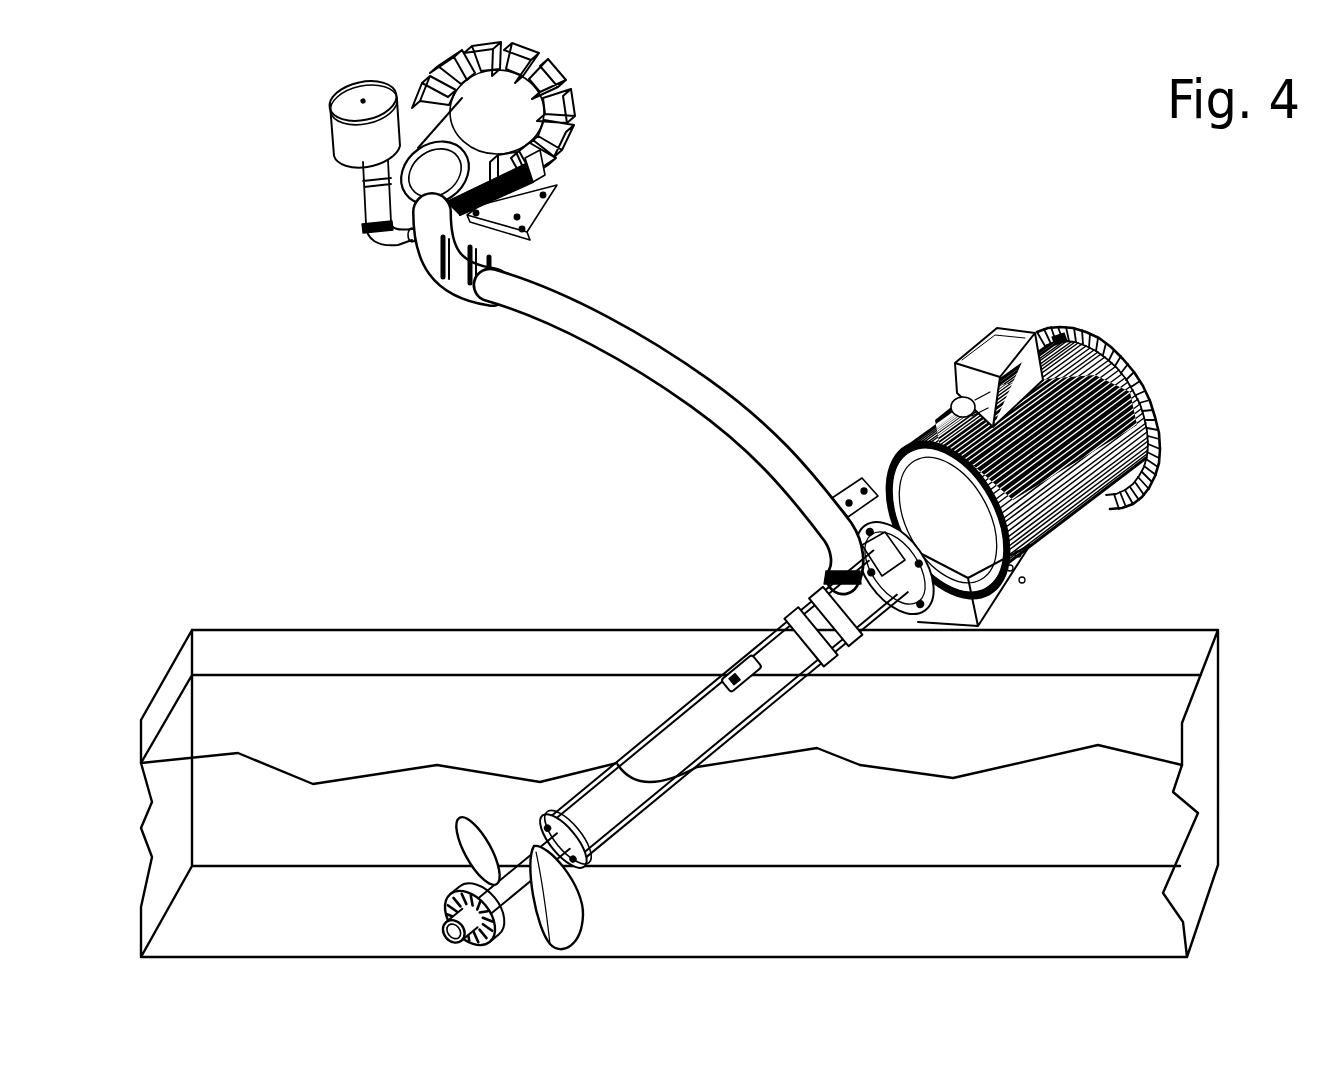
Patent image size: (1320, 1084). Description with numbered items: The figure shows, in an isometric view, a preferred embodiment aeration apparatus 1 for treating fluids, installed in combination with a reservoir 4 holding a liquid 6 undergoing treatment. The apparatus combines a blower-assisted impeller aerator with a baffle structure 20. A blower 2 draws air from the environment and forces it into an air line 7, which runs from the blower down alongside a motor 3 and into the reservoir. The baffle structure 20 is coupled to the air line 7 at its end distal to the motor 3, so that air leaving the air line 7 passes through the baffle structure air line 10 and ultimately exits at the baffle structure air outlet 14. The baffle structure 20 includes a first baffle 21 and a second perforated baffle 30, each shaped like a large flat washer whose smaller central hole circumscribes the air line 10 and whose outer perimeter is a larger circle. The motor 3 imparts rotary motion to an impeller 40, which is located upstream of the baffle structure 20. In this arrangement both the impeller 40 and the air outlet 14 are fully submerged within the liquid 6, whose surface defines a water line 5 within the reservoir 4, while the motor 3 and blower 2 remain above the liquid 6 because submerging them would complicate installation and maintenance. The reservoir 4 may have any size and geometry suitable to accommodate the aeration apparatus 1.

The aeration apparatus 1 is at (481, 313).
The blower 2 is at (345, 130).
The motor 3 is at (1158, 430).
The reservoir 4 is at (1223, 650).
The water line 5 is at (1123, 750).
The liquid 6 is at (1137, 822).
The air line 7 is at (808, 662).
The air line 10 is at (500, 866).
The baffle structure air outlet 14 is at (440, 937).
The baffle structure 20 is at (435, 895).
The first baffle 21 is at (470, 877).
The second perforated baffle 30 is at (440, 907).
The impeller 40 is at (570, 903).